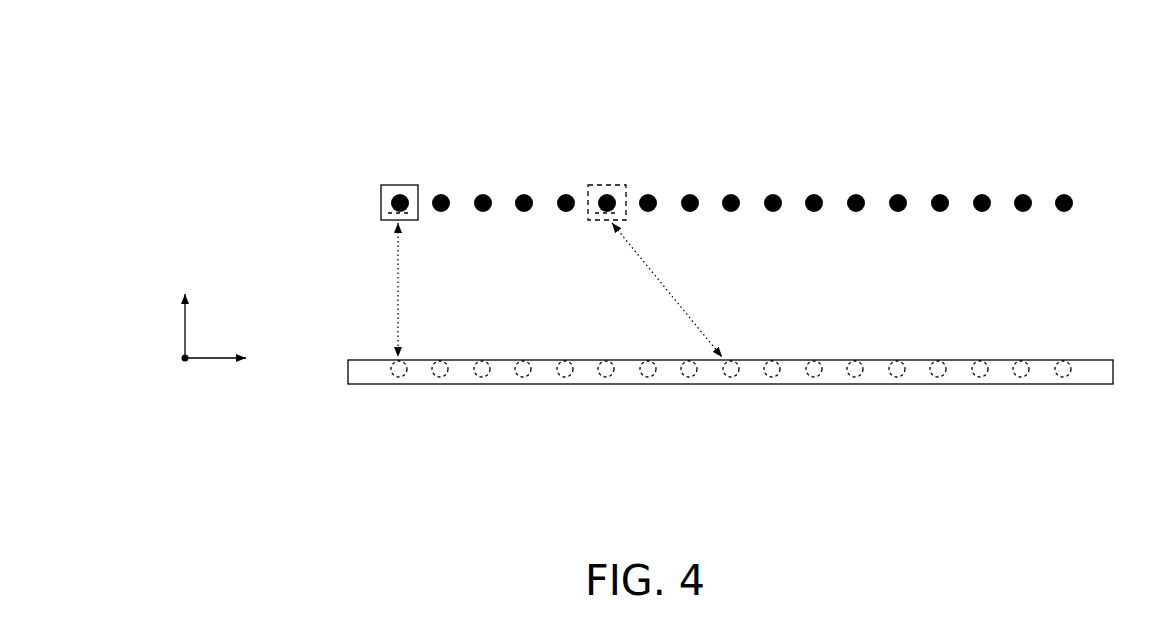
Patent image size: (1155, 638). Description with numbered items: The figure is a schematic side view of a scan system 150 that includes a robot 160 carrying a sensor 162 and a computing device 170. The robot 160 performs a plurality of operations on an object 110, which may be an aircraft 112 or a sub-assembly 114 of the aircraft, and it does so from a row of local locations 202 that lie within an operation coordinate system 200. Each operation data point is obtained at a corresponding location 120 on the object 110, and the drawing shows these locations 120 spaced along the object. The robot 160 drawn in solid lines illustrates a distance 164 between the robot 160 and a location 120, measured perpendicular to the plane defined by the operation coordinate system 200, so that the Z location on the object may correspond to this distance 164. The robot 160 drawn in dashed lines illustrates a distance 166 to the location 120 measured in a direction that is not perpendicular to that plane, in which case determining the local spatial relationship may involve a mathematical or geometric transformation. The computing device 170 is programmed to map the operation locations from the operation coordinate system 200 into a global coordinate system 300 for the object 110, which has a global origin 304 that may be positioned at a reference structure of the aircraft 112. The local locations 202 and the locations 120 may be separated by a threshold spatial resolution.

The scan system 150 is at (315, 77).
The operation coordinate system 200 is at (1094, 192).
The local locations 202 is at (1022, 195).
The computing device 170 is at (380, 196).
The robot 160 is at (398, 183).
The sensor 162 is at (380, 211).
The distance 164 is at (397, 290).
The distance 166 is at (670, 290).
The object 110 is at (497, 387).
The location 120 is at (398, 385).
The aircraft 112 is at (600, 385).
The sub-assembly 114 is at (703, 385).
The global coordinate system 300 is at (193, 396).
The global origin 304 is at (184, 359).